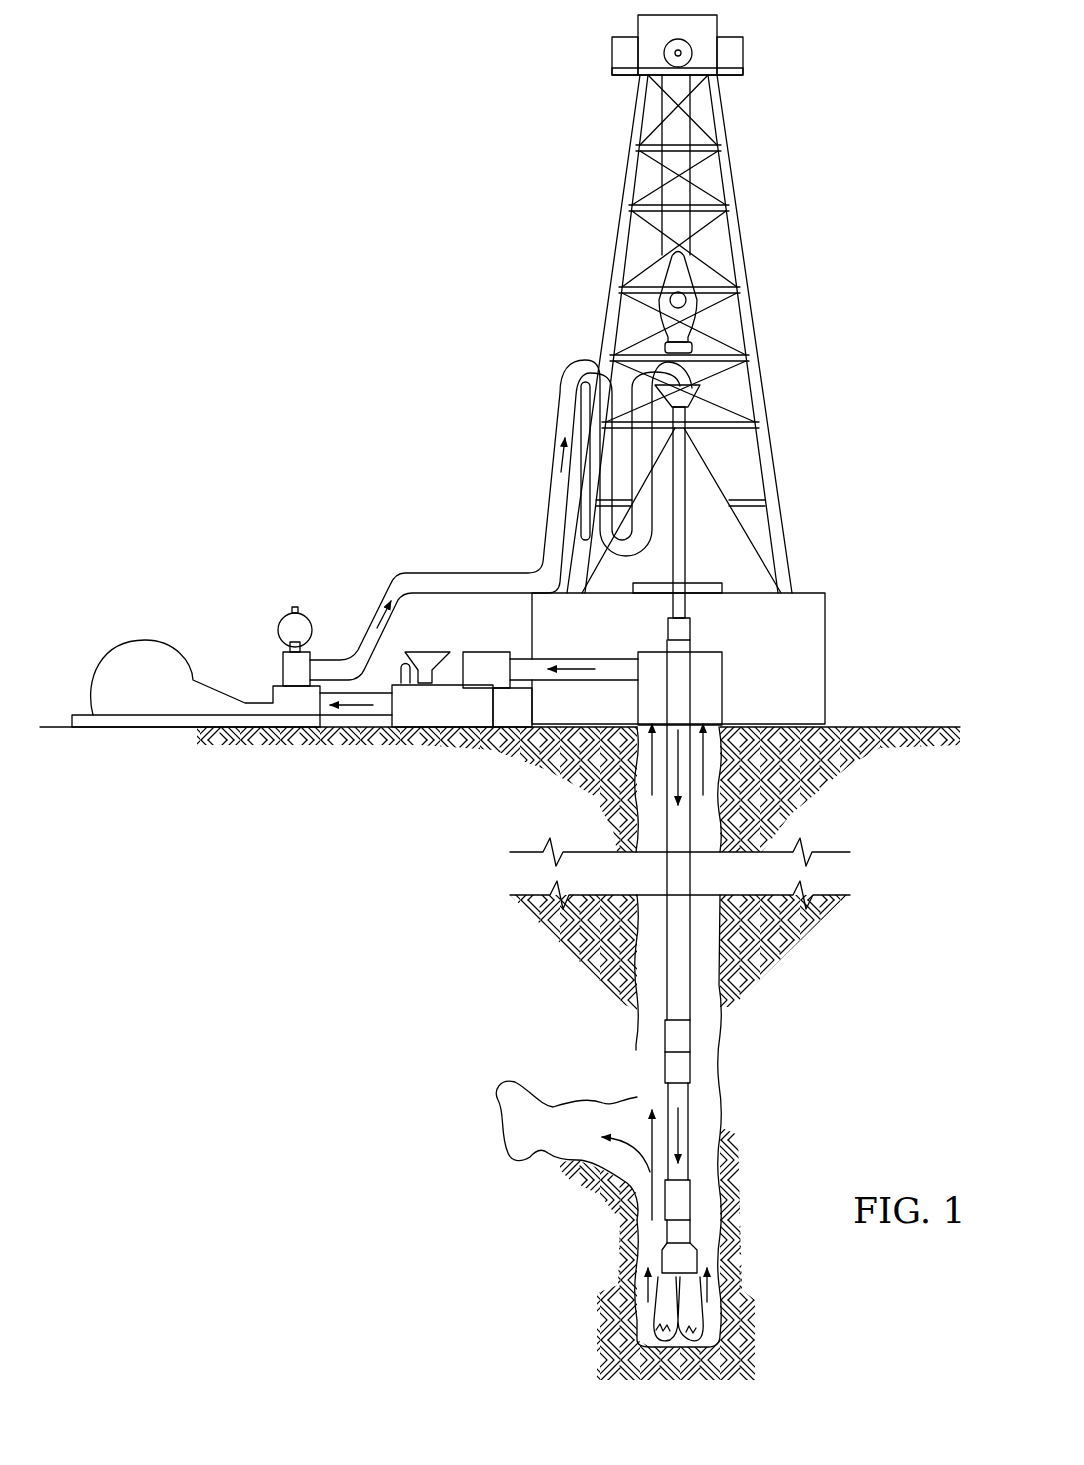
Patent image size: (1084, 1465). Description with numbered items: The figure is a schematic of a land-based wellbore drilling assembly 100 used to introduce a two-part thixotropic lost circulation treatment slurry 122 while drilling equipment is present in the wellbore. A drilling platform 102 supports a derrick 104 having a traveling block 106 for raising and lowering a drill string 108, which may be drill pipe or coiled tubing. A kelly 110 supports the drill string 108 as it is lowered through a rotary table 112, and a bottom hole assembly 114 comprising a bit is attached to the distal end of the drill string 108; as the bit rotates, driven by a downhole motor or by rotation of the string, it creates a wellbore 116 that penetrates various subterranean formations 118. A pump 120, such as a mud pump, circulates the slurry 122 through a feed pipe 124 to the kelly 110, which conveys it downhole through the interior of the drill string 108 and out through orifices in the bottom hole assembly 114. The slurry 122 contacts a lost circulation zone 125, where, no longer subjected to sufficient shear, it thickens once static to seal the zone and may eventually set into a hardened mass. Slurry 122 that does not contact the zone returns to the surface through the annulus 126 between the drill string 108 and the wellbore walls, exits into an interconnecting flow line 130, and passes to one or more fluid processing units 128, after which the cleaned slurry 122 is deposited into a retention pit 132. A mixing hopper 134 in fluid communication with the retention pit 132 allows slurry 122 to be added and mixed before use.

The wellbore drilling assembly 100 is at (500, 697).
The drilling platform 102 is at (826, 659).
The derrick 104 is at (750, 334).
The traveling block 106 is at (693, 287).
The drill string 108 is at (690, 970).
The kelly 110 is at (686, 557).
The rotary table 112 is at (723, 590).
The bottom hole assembly 114 is at (702, 1307).
The wellbore 116 is at (722, 1044).
The subterranean formations 118 is at (528, 990).
The pump 120 is at (133, 640).
The lost circulation treatment slurry 122 is at (382, 618).
The feed pipe 124 is at (468, 572).
The lost circulation zone 125 is at (537, 1150).
The annulus 126 is at (713, 1100).
The fluid processing unit 128 is at (490, 652).
The interconnecting flow line 130 is at (618, 656).
The retention pit 132 is at (442, 715).
The mixing hopper 134 is at (420, 652).